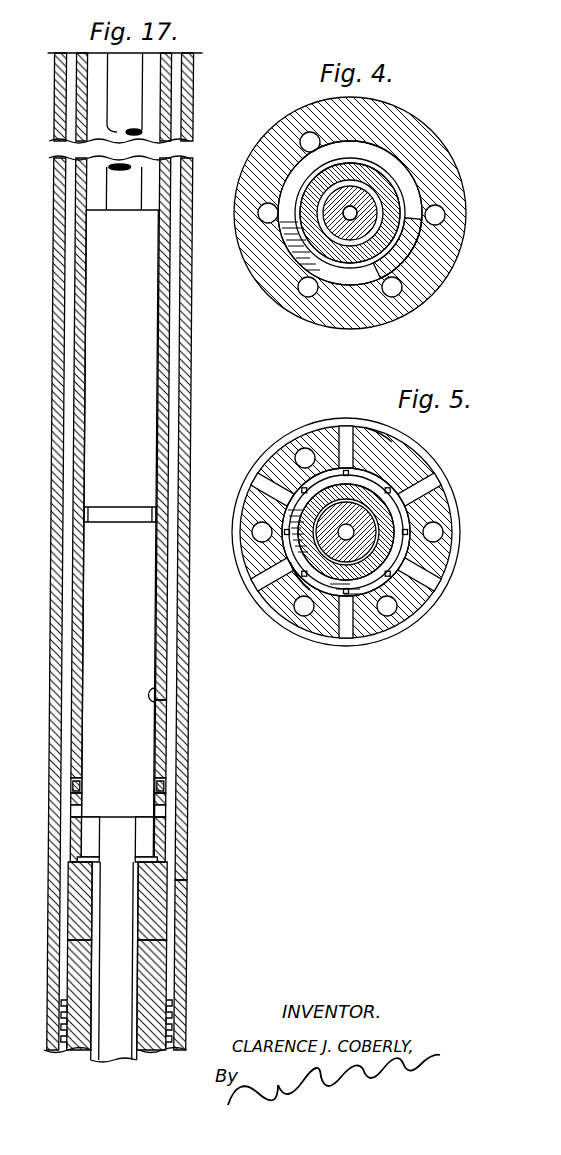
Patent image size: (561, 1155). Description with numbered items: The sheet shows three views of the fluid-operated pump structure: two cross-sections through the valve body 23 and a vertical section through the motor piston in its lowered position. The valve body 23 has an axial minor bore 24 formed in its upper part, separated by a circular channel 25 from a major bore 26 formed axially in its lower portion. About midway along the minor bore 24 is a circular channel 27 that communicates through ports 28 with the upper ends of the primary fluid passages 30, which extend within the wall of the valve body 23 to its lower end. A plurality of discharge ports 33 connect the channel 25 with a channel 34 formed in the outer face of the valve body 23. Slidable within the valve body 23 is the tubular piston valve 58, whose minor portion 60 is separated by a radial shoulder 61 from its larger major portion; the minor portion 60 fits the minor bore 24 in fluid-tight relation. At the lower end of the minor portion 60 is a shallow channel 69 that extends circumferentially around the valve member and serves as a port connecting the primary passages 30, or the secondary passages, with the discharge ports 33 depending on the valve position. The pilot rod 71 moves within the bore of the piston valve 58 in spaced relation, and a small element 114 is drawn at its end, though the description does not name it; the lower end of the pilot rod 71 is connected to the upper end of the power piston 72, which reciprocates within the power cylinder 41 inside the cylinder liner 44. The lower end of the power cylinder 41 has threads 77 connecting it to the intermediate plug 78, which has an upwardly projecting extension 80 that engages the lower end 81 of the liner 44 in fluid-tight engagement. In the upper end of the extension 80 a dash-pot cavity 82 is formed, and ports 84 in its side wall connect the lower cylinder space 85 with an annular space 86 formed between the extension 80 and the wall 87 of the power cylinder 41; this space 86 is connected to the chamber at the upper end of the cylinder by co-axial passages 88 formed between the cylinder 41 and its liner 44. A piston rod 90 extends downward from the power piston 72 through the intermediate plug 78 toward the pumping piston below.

In FIG. 4, the valve body 23 is at (300, 122).
In FIG. 5, the valve body 23 is at (447, 500).
In FIG. 4, the minor bore 24 is at (397, 190).
In FIG. 5, the circular channel 25 is at (373, 430).
In FIG. 5, the major bore 26 is at (363, 597).
In FIG. 4, the circular channel 27 is at (388, 162).
In FIG. 4, the ports 28 is at (393, 277).
In FIG. 4, the primary fluid passages 30 is at (303, 140).
In FIG. 5, the primary fluid passages 30 is at (298, 455).
In FIG. 5, the discharge ports 33 is at (343, 423).
In FIG. 5, the channel 34 is at (388, 636).
In FIG. 17, the power cylinder 41 is at (190, 366).
In FIG. 17, the cylinder liner 44 is at (175, 408).
In FIG. 4, the piston valve 58 is at (307, 193).
In FIG. 5, the piston valve 58 is at (290, 524).
In FIG. 4, the minor portion 60 is at (357, 170).
In FIG. 5, the minor portion 60 is at (375, 493).
In FIG. 5, the radial shoulder 61 is at (328, 477).
In FIG. 4, the shallow channel 69 is at (350, 218).
In FIG. 5, the shallow channel 69 is at (430, 483).
In FIG. 17, the pilot rod 71 is at (124, 115).
In FIG. 4, the pilot rod 71 is at (333, 223).
In FIG. 5, the pilot rod 71 is at (284, 578).
In FIG. 17, the power piston 72 is at (95, 638).
In FIG. 17, the threads 77 is at (181, 1025).
In FIG. 17, the intermediate plug 78 is at (160, 978).
In FIG. 17, the extension 80 is at (164, 885).
In FIG. 17, the lower end of the liner 81 is at (169, 776).
In FIG. 17, the dash-pot cavity 82 is at (149, 842).
In FIG. 17, the ports 84 is at (168, 810).
In FIG. 17, the lower cylinder space 85 is at (157, 693).
In FIG. 17, the annular space 86 is at (178, 832).
In FIG. 17, the wall 87 is at (192, 915).
In FIG. 17, the co-axial passages 88 is at (178, 735).
In FIG. 17, the piston rod 90 is at (122, 900).
In FIG. 17, the valve disc 114 is at (131, 133).
In FIG. 4, the valve disc 114 is at (352, 222).
In FIG. 5, the valve disc 114 is at (338, 534).